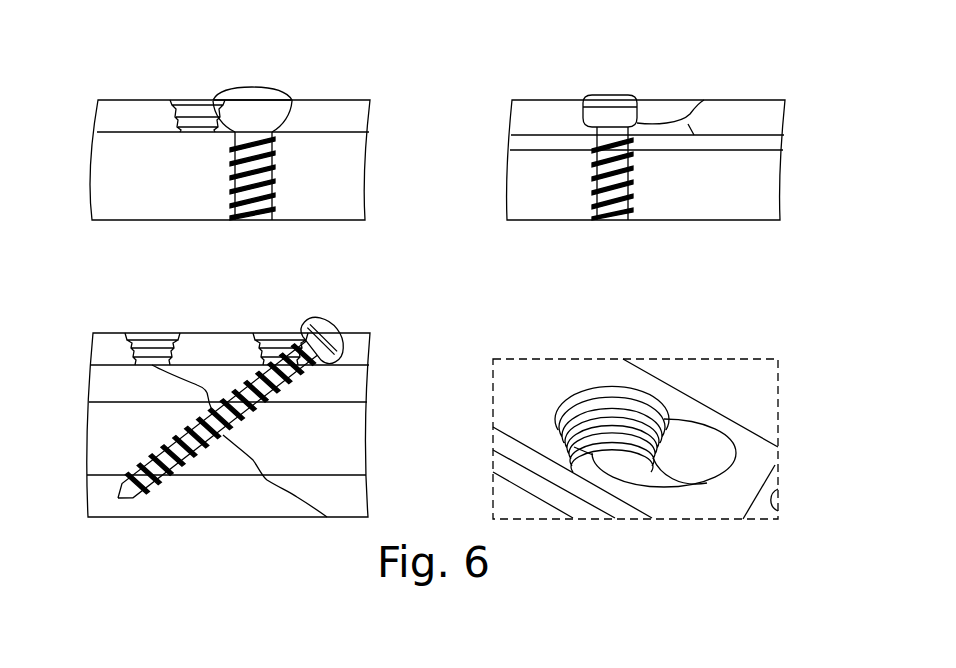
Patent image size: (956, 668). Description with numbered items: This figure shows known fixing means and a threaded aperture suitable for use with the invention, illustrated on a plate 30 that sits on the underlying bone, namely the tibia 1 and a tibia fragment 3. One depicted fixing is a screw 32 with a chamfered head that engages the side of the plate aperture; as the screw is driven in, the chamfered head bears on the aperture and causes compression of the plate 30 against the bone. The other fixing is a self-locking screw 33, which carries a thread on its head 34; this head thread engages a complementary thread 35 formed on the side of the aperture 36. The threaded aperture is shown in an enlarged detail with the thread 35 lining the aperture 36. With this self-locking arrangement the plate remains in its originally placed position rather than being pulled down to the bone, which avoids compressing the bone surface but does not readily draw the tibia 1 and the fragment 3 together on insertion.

The tibia 1 is at (223, 500).
The tibia fragment 3 is at (343, 498).
The plate 30 is at (340, 113).
The screw 32 is at (252, 113).
The self-locking screw 33 is at (590, 152).
The head 34 is at (610, 110).
The complementary thread 35 is at (603, 427).
The aperture 36 is at (640, 468).